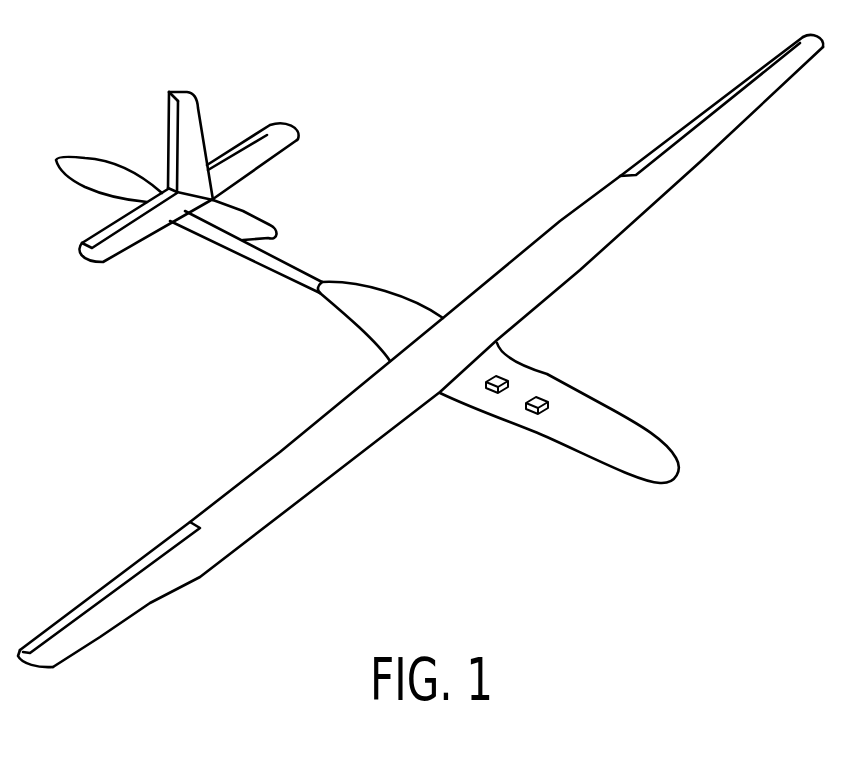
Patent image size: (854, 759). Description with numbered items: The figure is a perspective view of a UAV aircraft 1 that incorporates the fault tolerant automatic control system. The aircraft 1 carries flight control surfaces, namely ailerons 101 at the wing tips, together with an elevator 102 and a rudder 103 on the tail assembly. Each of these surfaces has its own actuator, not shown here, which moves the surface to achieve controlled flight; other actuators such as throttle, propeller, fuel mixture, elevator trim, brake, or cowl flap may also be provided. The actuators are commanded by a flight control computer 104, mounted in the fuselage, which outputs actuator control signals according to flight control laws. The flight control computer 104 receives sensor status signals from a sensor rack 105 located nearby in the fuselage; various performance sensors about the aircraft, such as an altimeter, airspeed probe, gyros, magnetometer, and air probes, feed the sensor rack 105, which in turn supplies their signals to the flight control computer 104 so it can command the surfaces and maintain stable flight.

The UAV aircraft 1 is at (401, 455).
The ailerons 101 is at (657, 145).
The elevator 102 is at (107, 228).
The rudder 103 is at (172, 147).
The flight control computer 104 is at (491, 394).
The sensor rack 105 is at (540, 396).